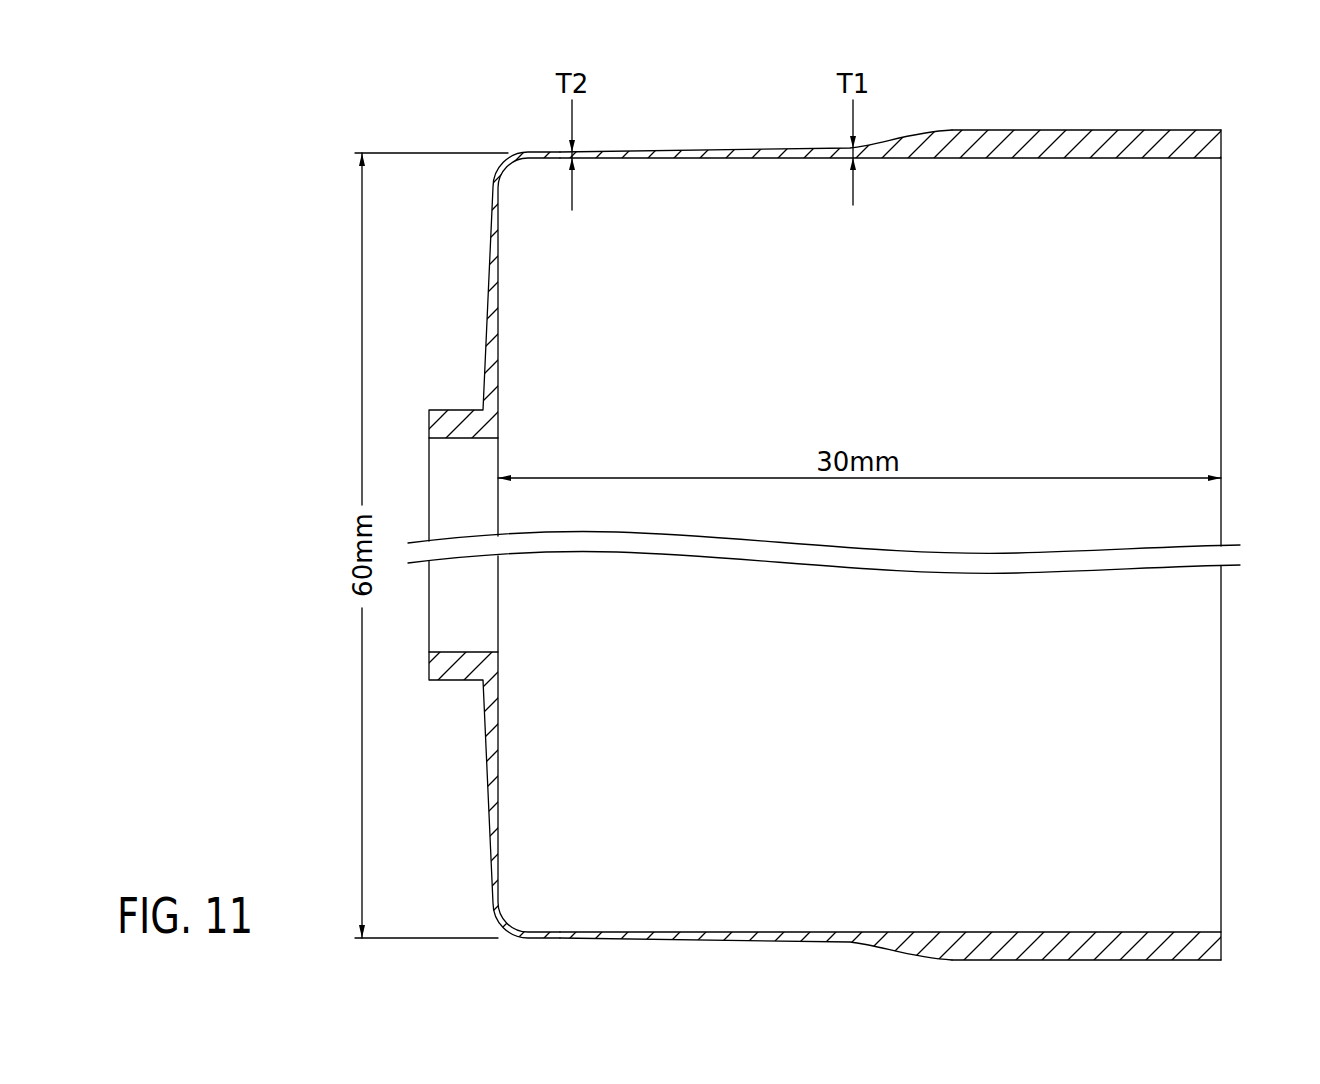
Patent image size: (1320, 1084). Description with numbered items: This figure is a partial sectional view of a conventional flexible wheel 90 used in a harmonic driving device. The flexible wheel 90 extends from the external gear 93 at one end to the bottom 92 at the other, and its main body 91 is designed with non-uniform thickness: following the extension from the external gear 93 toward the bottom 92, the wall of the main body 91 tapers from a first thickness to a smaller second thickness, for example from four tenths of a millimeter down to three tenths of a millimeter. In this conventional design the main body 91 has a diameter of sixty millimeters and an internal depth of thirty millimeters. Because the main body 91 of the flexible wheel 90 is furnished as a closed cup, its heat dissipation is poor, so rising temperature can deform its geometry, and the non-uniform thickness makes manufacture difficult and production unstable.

The flexible wheel 90 is at (847, 501).
The main body 91 is at (1198, 297).
The bottom 92 is at (489, 311).
The external gear 93 is at (1068, 137).